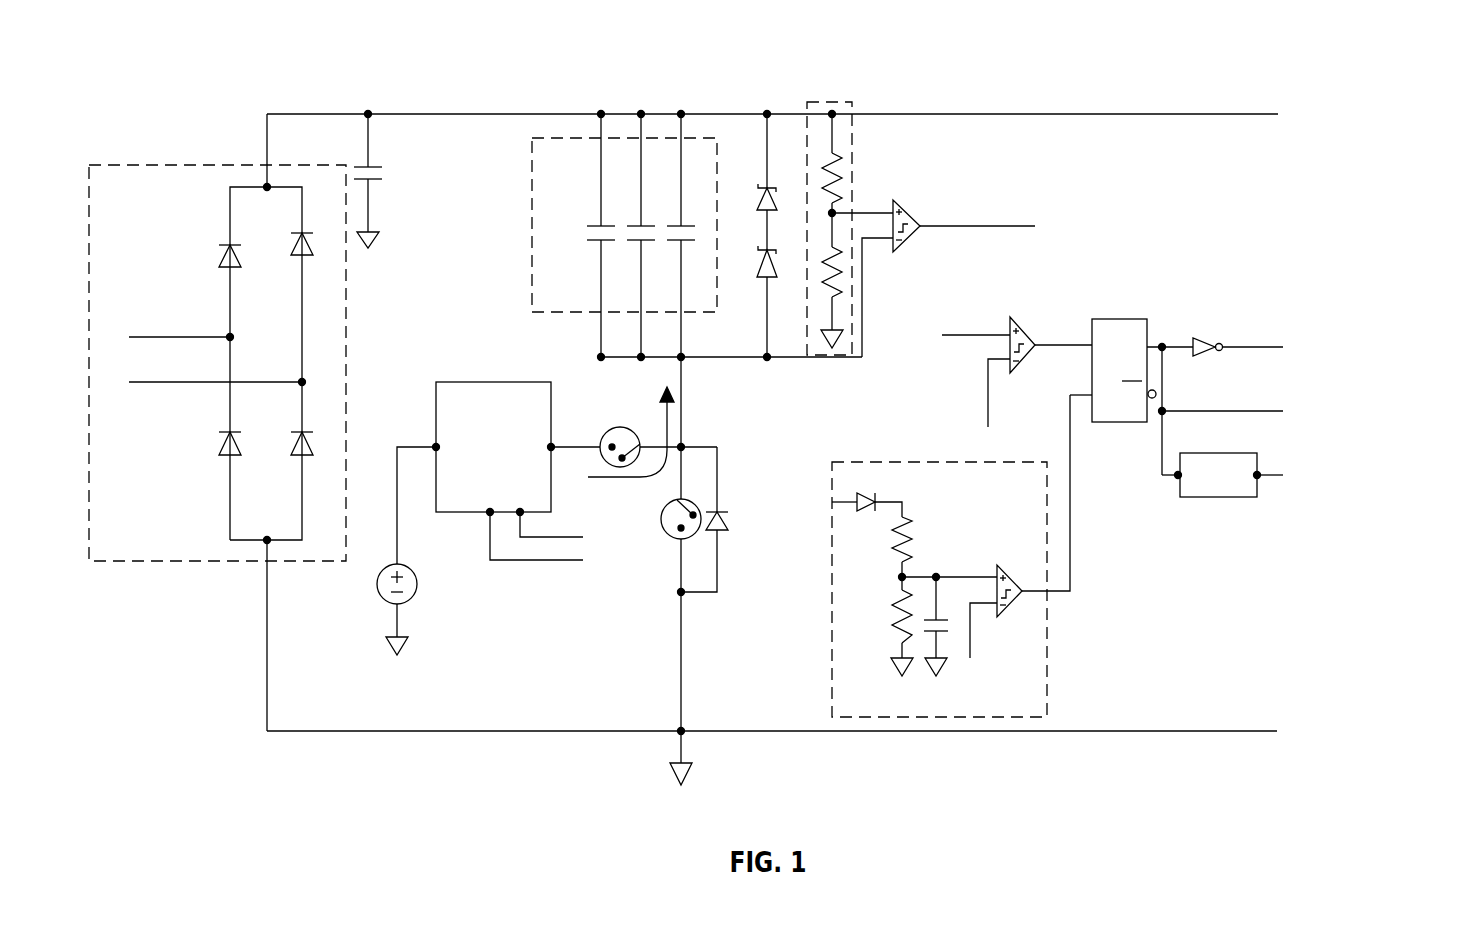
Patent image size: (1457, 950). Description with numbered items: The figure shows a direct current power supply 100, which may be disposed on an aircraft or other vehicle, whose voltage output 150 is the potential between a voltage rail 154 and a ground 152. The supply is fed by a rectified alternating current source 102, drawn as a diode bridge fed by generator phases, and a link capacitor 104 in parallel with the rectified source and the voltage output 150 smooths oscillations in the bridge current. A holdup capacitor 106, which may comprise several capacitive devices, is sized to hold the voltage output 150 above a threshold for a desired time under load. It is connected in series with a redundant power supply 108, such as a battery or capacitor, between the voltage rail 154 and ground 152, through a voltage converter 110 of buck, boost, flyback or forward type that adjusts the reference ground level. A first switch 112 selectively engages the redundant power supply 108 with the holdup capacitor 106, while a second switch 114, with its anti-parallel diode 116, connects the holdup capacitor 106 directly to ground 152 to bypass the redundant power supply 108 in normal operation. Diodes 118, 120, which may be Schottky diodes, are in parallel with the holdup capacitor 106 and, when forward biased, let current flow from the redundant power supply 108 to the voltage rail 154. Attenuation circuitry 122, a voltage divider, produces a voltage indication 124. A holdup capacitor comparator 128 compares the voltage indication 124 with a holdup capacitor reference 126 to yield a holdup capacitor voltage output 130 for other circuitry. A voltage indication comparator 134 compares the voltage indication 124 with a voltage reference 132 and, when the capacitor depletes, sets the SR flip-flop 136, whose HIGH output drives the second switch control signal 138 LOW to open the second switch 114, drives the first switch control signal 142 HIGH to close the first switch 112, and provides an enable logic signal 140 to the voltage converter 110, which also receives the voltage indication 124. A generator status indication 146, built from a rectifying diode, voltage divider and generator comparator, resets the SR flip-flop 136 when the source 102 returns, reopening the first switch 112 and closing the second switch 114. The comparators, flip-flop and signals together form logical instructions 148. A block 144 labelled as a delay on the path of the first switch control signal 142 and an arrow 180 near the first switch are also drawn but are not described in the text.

The direct current power supply 100 is at (817, 45).
The alternating current source 102 is at (159, 155).
The link capacitor 104 is at (382, 158).
The holdup capacitor 106 is at (525, 213).
The redundant power supply 108 is at (410, 600).
The voltage converter 110 is at (471, 370).
The first switch 112 is at (618, 427).
The second switch 114 is at (670, 535).
The anti-parallel diode 116 is at (725, 512).
The diode 118 is at (765, 186).
The diode 120 is at (778, 248).
The attenuation circuitry 122 is at (855, 96).
The voltage indication 124 is at (915, 278).
The holdup capacitor reference 126 is at (910, 297).
The holdup capacitor comparator 128 is at (917, 218).
The holdup capacitor voltage output 130 is at (1002, 225).
The voltage reference 132 is at (987, 395).
The voltage indication comparator 134 is at (1025, 318).
The set-reset (SR) flip-flop 136 is at (1135, 318).
The second switch control signal 138 is at (1255, 345).
The enable logic signal 140 is at (553, 537).
The first switch control signal 142 is at (1270, 475).
The delay block 144 is at (1200, 497).
The generator status indication 146 is at (923, 458).
The logical instructions 148 is at (1139, 277).
The voltage output 150 is at (1367, 138).
The ground 152 is at (1168, 731).
The voltage rail 154 is at (1032, 114).
The current flow path 180 is at (667, 415).